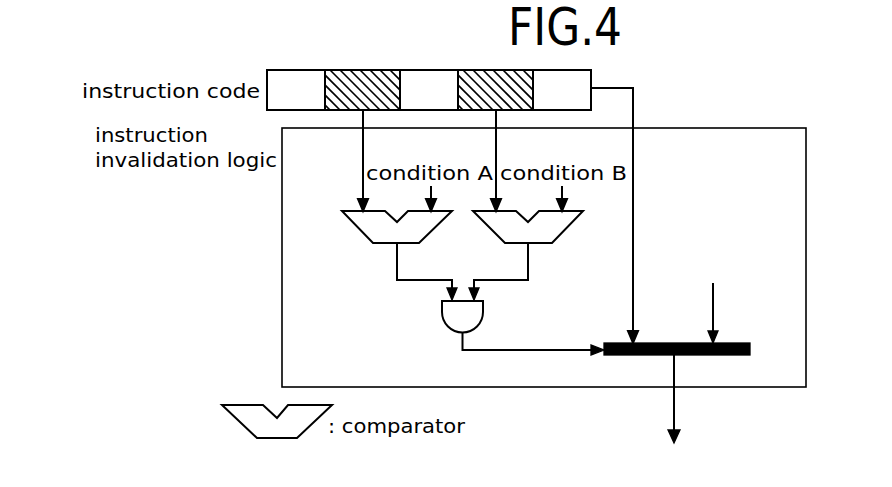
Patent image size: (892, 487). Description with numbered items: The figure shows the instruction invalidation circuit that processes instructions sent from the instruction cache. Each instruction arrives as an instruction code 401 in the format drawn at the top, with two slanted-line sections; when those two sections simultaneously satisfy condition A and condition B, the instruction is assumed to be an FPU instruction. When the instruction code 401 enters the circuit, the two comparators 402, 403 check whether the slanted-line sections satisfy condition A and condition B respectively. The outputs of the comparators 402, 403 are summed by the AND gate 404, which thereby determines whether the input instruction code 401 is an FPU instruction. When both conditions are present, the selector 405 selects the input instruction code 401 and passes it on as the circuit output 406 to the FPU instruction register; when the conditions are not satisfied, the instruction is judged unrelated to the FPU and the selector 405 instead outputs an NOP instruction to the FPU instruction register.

The instruction code 401 is at (580, 82).
The comparator 402 is at (385, 231).
The comparator 403 is at (515, 231).
The AND gate 404 is at (458, 317).
The selector 405 is at (737, 340).
The output instruction 406 is at (677, 423).